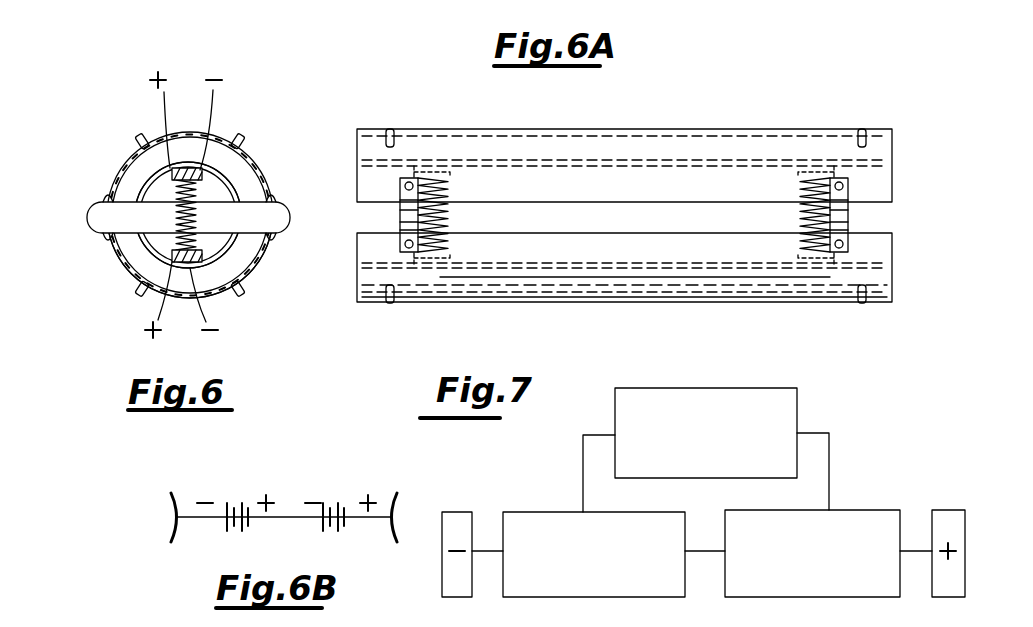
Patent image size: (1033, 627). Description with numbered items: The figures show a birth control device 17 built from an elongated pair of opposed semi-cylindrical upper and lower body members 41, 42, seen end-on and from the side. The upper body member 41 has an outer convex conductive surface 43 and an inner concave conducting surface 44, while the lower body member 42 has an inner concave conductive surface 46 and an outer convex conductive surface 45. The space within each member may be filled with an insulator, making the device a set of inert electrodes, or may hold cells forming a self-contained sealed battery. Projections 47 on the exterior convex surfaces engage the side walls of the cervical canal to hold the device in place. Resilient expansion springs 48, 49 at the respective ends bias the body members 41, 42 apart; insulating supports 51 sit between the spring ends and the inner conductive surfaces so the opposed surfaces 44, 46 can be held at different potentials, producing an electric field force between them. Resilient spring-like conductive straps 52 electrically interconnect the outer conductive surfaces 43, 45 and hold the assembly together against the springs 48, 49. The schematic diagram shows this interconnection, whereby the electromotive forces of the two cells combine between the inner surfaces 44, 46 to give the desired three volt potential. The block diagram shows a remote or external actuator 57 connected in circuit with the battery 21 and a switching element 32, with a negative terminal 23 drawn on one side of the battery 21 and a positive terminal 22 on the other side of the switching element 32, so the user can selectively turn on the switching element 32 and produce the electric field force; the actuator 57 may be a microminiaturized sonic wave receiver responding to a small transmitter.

In FIG. 6, the birth control device 17 is at (114, 136).
In FIG. 6A, the birth control device 17 is at (668, 112).
In FIG. 7, the battery 21 is at (546, 514).
In FIG. 7, the positive terminal 22 is at (946, 516).
In FIG. 7, the negative terminal 23 is at (458, 522).
In FIG. 7, the switching element 32 is at (884, 514).
In FIG. 6, the upper body member 41 is at (240, 164).
In FIG. 6, the lower body member 42 is at (238, 262).
In FIG. 6, the outer convex conductive surface 43 is at (118, 163).
In FIG. 6A, the outer convex conductive surface 43 is at (534, 130).
In FIG. 6, the inner concave conducting surface 44 is at (218, 195).
In FIG. 6A, the inner concave conducting surface 44 is at (520, 170).
In FIG. 6B, the inner concave conducting surface 44 is at (170, 514).
In FIG. 6, the outer convex conductive surface 45 is at (130, 268).
In FIG. 6A, the outer convex conductive surface 45 is at (530, 302).
In FIG. 6, the inner concave conductive surface 46 is at (152, 264).
In FIG. 6A, the inner concave conductive surface 46 is at (598, 268).
In FIG. 6B, the inner concave conductive surface 46 is at (390, 494).
In FIG. 6, the projections 47 is at (134, 136).
In FIG. 6A, the projections 47 is at (388, 130).
In FIG. 6, the expansion spring 48 is at (196, 192).
In FIG. 6A, the expansion spring 48 is at (446, 208).
In FIG. 6A, the expansion spring 49 is at (802, 220).
In FIG. 6, the insulating supports 51 is at (177, 190).
In FIG. 6A, the insulating supports 51 is at (450, 172).
In FIG. 6, the conductive straps 52 is at (96, 204).
In FIG. 6A, the conductive straps 52 is at (400, 222).
In FIG. 7, the external actuator 57 is at (726, 388).